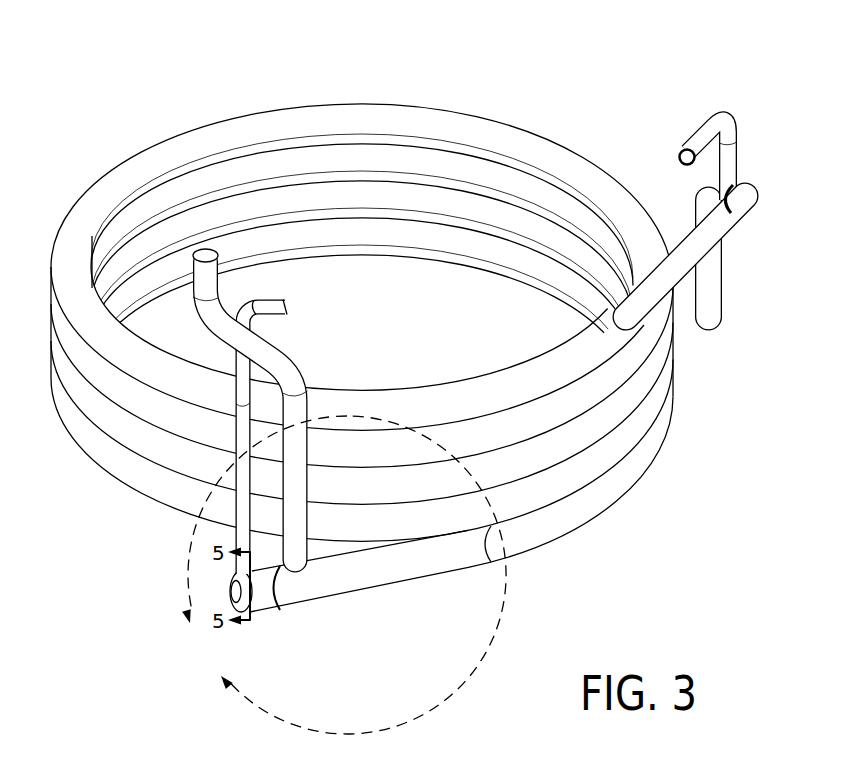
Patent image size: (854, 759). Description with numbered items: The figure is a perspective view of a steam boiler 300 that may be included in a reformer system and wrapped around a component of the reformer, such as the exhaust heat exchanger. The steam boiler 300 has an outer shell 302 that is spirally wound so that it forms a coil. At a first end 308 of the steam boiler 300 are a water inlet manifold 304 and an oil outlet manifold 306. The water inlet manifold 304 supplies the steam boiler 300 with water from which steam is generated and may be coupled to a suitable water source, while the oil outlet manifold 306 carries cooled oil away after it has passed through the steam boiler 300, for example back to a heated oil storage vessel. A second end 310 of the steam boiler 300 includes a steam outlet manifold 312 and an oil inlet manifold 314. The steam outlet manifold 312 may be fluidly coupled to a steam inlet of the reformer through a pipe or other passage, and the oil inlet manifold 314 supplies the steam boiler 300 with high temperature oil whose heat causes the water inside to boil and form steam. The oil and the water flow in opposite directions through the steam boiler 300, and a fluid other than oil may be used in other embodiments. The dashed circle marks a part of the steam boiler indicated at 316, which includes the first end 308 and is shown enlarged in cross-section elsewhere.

The steam boiler 300 is at (559, 65).
The outer shell 302 is at (182, 146).
The water inlet manifold 304 is at (283, 296).
The oil outlet manifold 306 is at (209, 245).
The first end 308 is at (285, 622).
The second end 310 is at (757, 178).
The steam outlet manifold 312 is at (677, 146).
The oil inlet manifold 314 is at (713, 336).
The part of the steam boiler shown in cross-section 316 is at (344, 575).